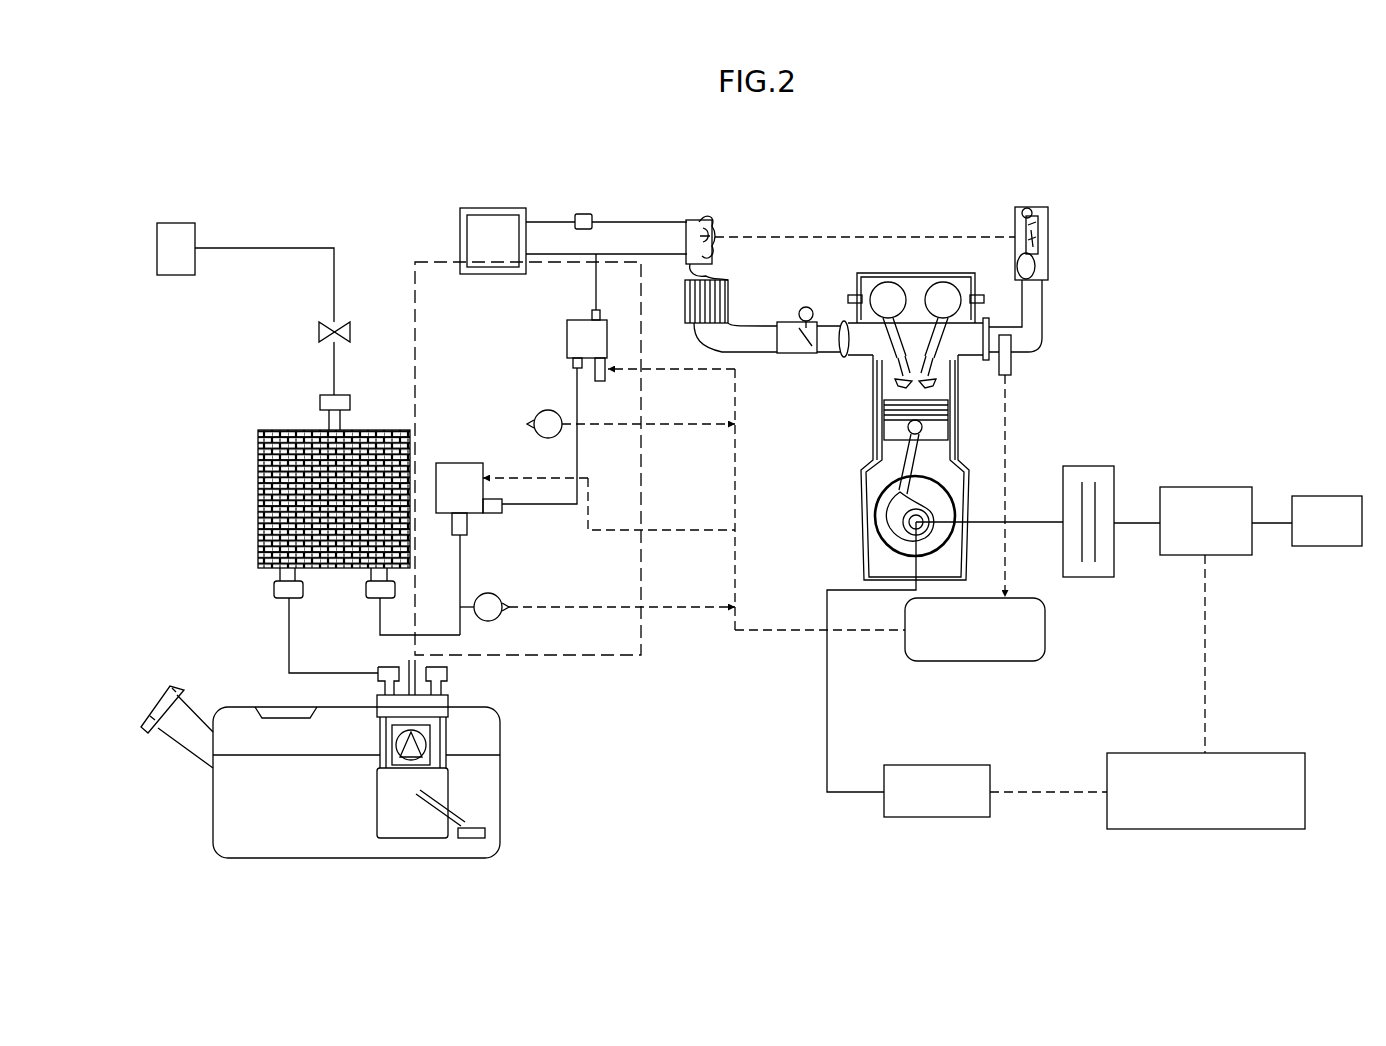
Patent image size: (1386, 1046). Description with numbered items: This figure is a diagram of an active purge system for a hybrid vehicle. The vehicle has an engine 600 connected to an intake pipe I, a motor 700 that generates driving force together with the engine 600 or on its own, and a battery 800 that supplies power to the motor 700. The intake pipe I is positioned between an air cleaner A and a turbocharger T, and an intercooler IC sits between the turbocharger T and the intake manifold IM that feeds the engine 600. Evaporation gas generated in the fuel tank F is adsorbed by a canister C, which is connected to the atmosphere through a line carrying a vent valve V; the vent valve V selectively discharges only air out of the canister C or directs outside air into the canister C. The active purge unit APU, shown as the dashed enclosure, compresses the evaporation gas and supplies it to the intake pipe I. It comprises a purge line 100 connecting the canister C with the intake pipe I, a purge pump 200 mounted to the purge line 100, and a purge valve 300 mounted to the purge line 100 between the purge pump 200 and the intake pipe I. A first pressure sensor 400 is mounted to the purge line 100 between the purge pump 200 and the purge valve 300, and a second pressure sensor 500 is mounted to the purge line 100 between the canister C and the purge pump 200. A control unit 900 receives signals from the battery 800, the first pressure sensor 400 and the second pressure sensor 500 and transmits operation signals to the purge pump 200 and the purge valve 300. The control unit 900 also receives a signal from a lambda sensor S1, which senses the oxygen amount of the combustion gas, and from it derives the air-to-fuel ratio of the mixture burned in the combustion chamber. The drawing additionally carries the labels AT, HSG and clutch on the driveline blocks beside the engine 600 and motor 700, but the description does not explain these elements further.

The purge line 100 is at (460, 567).
The purge pump 200 is at (457, 463).
The purge valve 300 is at (572, 337).
The first pressure sensor 400 is at (553, 432).
The second pressure sensor 500 is at (493, 618).
The engine 600 is at (842, 474).
The motor 700 is at (1228, 487).
The battery 800 is at (1283, 753).
The control unit 900 is at (977, 661).
The vent valve V is at (180, 235).
The canister C is at (263, 502).
The fuel tank F is at (503, 797).
The air cleaner A is at (492, 238).
The intake pipe I is at (627, 235).
The turbocharger T is at (712, 220).
The intercooler IC is at (716, 300).
The intake manifold IM is at (829, 330).
The lambda sensor S1 is at (1013, 363).
The active purge unit APU is at (612, 660).
The automatic transmission AT is at (1327, 521).
The hybrid starter generator HSG is at (908, 669).
The element clutch is at (1089, 578).